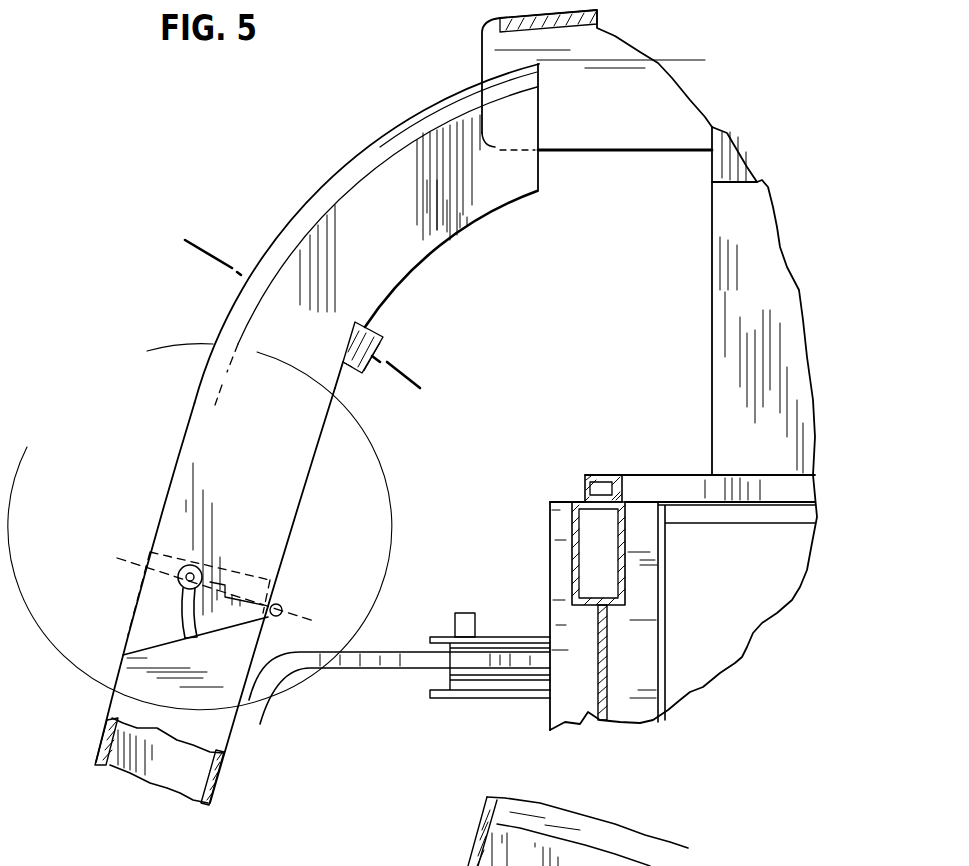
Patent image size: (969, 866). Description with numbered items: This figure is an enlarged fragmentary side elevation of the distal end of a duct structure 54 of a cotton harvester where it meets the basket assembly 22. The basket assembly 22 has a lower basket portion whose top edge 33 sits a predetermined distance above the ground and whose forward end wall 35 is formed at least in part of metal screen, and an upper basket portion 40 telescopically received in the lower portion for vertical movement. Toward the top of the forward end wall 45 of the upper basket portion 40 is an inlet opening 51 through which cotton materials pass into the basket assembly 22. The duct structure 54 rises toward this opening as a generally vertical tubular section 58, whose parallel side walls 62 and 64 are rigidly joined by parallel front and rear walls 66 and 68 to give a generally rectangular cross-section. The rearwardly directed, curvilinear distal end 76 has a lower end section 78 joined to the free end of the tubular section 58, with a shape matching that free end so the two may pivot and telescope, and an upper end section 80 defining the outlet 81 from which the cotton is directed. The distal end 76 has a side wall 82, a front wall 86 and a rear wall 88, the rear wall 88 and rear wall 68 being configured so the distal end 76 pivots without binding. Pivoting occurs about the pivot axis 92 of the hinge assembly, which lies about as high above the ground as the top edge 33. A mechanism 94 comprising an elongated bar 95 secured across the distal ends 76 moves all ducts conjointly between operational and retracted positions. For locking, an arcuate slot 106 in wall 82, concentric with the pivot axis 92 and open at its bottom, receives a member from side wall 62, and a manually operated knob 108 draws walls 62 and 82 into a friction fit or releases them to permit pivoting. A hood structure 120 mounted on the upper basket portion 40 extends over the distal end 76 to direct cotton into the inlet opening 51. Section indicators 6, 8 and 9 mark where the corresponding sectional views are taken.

The basket assembly 22 is at (755, 676).
The top edge 33 is at (776, 473).
The forward end wall 35 is at (606, 722).
The upper basket portion 40 is at (692, 317).
The forward end wall 45 is at (712, 364).
The inlet opening 51 is at (710, 210).
The duct structure 54 is at (280, 170).
The vertical tubular section 58 is at (147, 687).
The side wall 62 is at (233, 680).
The side wall 64 is at (188, 792).
The front wall 66 is at (100, 752).
The rear wall 68 is at (228, 777).
The distal end 76 is at (396, 112).
The lower end section 78 is at (275, 502).
The upper end section 80 is at (503, 210).
The outlet 81 is at (540, 172).
The side wall 82 is at (259, 440).
The front wall 86 is at (191, 412).
The rear wall 88 is at (320, 428).
The pivot axis 92 is at (278, 604).
The mechanism 94 is at (397, 341).
The elongated bar 95 is at (370, 368).
The elongated slot 106 is at (180, 636).
The knob 108 is at (188, 565).
The hood structure 120 is at (468, 57).
The section line 6- 6 is at (200, 525).
The section line 8- 8 is at (129, 546).
The section line 9- 9 is at (175, 266).